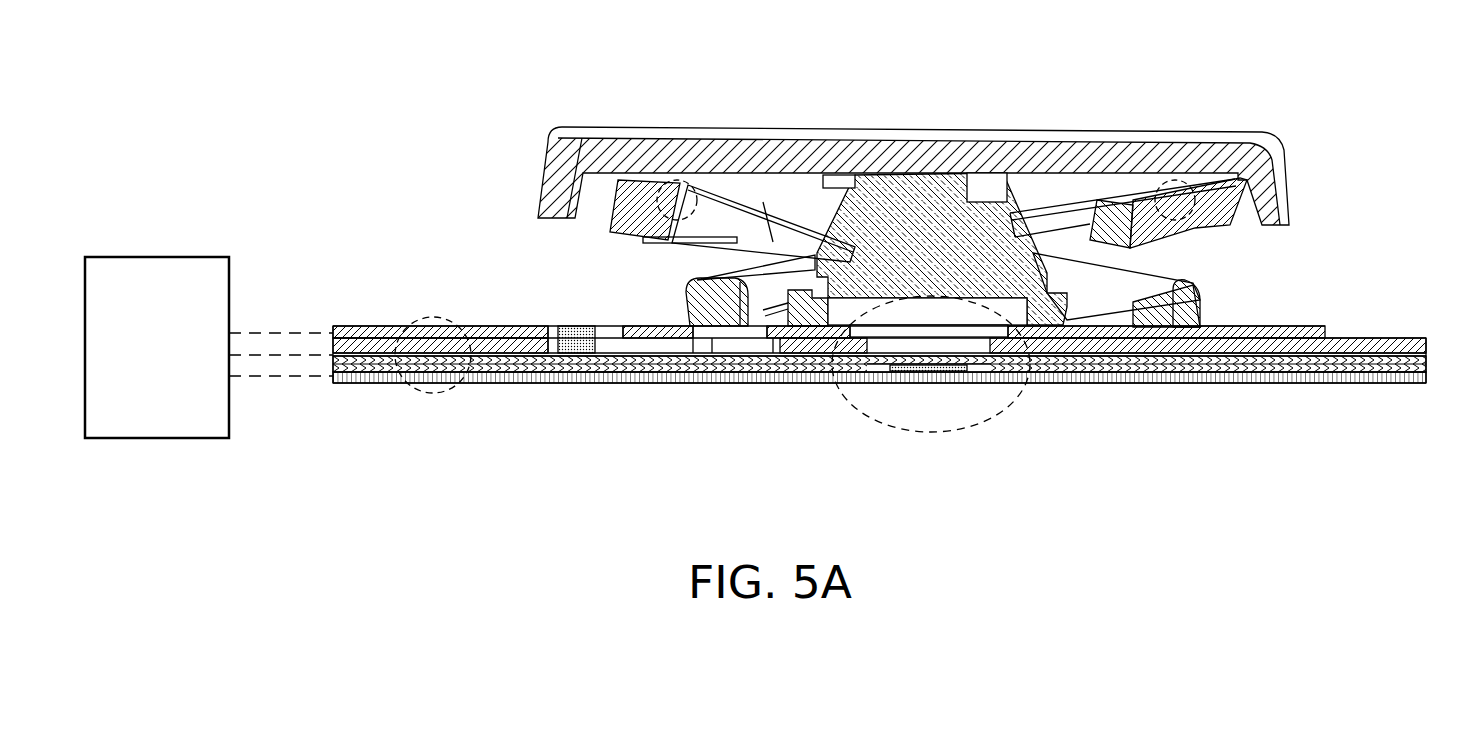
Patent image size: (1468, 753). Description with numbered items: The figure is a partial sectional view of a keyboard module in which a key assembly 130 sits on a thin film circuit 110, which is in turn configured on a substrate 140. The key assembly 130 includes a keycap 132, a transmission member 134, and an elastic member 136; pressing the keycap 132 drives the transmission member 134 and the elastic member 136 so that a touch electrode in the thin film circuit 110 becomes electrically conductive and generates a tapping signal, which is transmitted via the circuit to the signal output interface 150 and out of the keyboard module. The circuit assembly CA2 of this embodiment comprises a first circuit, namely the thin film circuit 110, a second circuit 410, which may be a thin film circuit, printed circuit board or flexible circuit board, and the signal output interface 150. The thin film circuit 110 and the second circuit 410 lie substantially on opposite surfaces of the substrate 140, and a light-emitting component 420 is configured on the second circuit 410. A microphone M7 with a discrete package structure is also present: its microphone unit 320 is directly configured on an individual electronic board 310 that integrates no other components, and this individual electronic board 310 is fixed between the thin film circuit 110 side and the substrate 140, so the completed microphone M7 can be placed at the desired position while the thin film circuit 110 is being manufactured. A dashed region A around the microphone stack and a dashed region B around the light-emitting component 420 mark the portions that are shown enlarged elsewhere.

The key assembly 130 is at (270, 15).
The keycap 132 is at (1012, 128).
The transmission member 134 is at (720, 220).
The elastic member 136 is at (930, 225).
The circuit assembly CA2 is at (437, 15).
The thin film circuit 110 is at (1306, 327).
The second circuit 410 is at (1393, 382).
The signal output interface 150 is at (150, 257).
The microphone M7 is at (602, 15).
The individual electronic board 310 is at (362, 328).
The microphone unit 320 is at (574, 330).
The substrate 140 is at (1393, 339).
The light-emitting component 420 is at (918, 380).
The region A is at (440, 400).
The region B is at (955, 430).